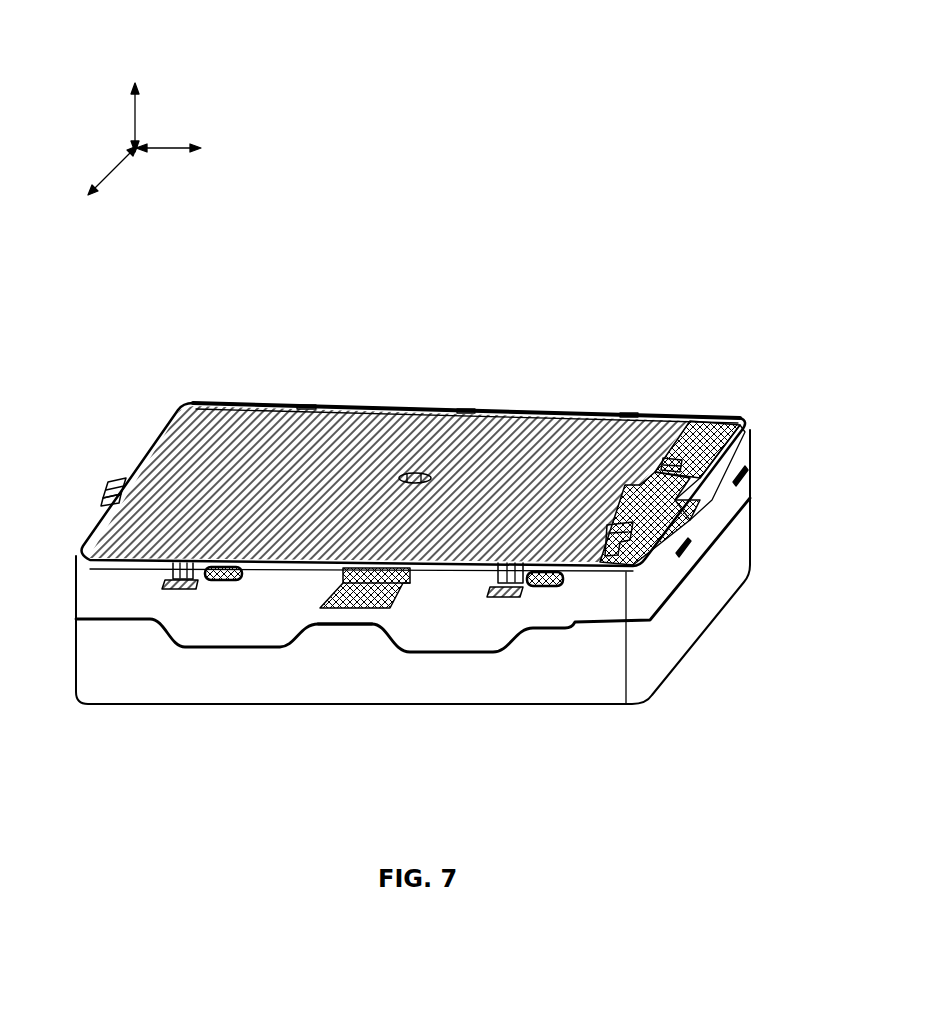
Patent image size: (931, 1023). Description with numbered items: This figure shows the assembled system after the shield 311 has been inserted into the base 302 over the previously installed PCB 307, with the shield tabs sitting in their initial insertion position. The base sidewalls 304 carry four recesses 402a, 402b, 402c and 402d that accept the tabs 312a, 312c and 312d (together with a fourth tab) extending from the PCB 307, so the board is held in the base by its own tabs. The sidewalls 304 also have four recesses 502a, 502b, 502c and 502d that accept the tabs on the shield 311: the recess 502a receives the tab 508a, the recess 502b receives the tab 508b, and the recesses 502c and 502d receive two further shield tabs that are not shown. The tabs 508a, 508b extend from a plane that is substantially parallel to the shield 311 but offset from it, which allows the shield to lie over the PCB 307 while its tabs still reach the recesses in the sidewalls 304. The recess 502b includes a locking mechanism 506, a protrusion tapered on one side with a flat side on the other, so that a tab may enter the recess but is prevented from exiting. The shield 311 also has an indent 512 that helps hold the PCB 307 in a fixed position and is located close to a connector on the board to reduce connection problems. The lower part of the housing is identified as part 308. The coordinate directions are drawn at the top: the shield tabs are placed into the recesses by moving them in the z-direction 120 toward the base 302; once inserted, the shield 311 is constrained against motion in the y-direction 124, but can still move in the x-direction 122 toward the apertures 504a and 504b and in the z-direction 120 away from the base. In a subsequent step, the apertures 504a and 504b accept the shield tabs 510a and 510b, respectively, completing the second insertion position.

The z-direction 120 is at (136, 53).
The x-direction 122 is at (230, 152).
The y-direction 124 is at (84, 232).
The base 302 is at (93, 622).
The base sidewalls 304 is at (660, 608).
The PCB 307 is at (717, 432).
The lower housing portion 308 is at (660, 670).
The shield 311 is at (350, 433).
The tab 312a is at (363, 608).
The tab 312c is at (100, 497).
The tab 312d is at (747, 522).
The recess 402a is at (337, 583).
The recess 402b is at (467, 405).
The recess 402c is at (132, 470).
The recess 402d is at (710, 480).
The recess 502a is at (220, 582).
The recess 502b is at (533, 584).
The recess 502c is at (307, 402).
The recess 502d is at (630, 406).
The aperture 504a is at (683, 543).
The aperture 504b is at (743, 470).
The locking mechanism 506 is at (527, 566).
The tab 508a is at (170, 587).
The tab 508b is at (487, 595).
The tab 510a is at (622, 548).
The tab 510b is at (672, 460).
The indent 512 is at (427, 476).